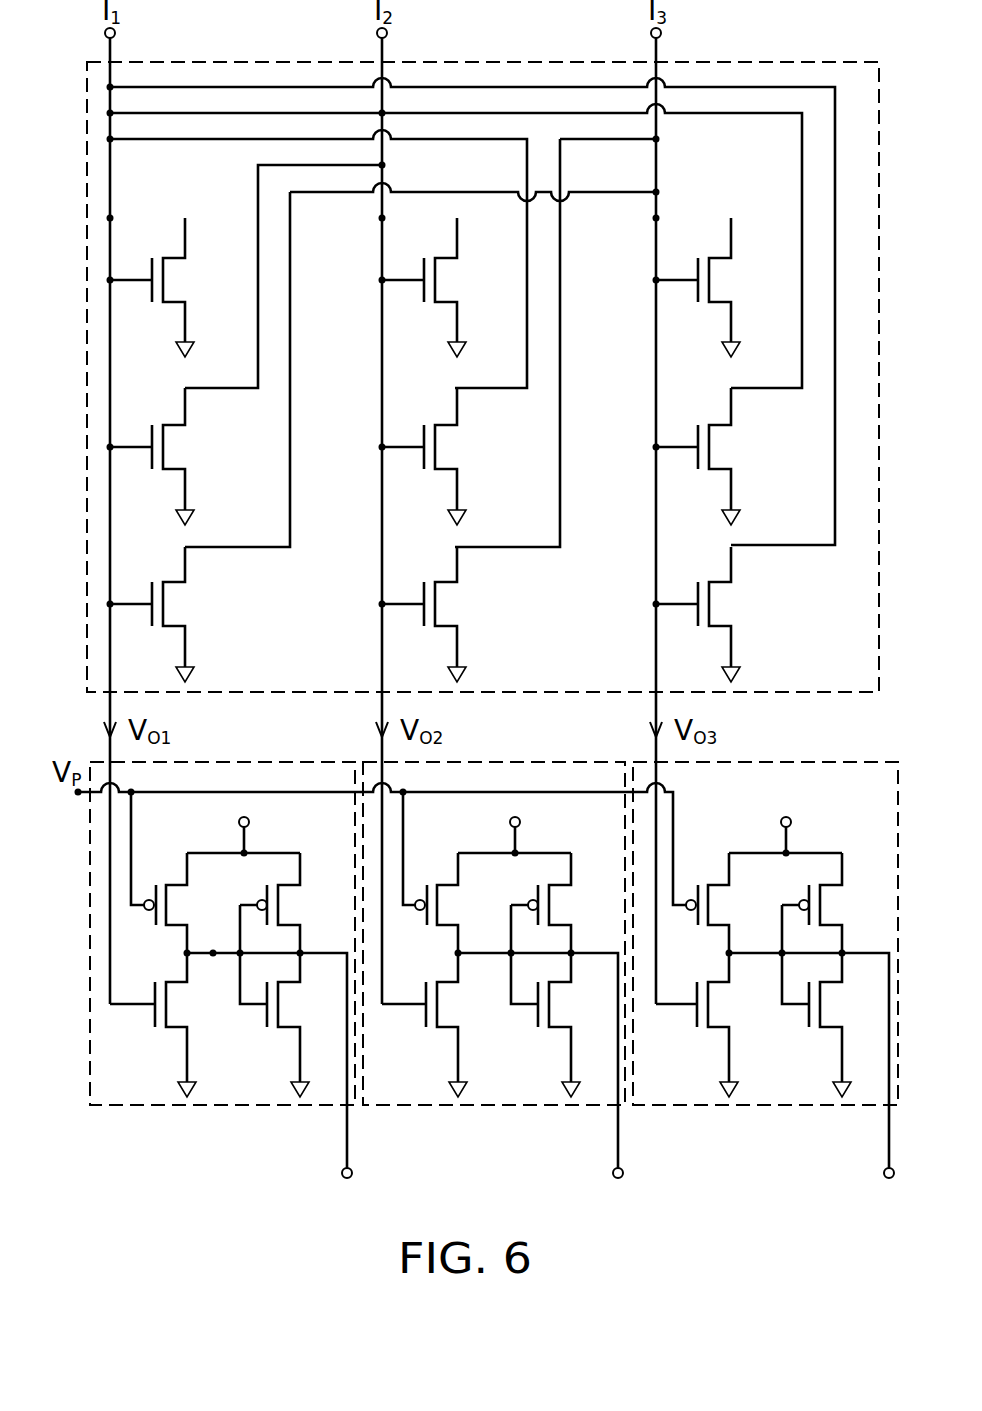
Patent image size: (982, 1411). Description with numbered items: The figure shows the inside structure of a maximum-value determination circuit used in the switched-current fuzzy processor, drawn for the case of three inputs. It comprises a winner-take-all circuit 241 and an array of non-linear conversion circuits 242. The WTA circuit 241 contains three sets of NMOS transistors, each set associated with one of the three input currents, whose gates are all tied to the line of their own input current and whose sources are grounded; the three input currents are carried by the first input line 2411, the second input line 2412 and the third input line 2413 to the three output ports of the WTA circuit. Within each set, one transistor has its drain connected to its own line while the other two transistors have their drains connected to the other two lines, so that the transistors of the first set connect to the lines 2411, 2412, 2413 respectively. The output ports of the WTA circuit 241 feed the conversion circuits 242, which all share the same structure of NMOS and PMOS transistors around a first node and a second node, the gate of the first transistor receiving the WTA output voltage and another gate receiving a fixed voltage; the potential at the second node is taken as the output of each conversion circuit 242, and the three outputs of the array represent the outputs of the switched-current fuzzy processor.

The winner-take-all circuit 241 is at (773, 60).
The I1 line 2411 is at (110, 188).
The I2 line 2412 is at (382, 250).
The I3 line 2413 is at (656, 250).
The non-linear conversion circuit 242 is at (230, 1107).